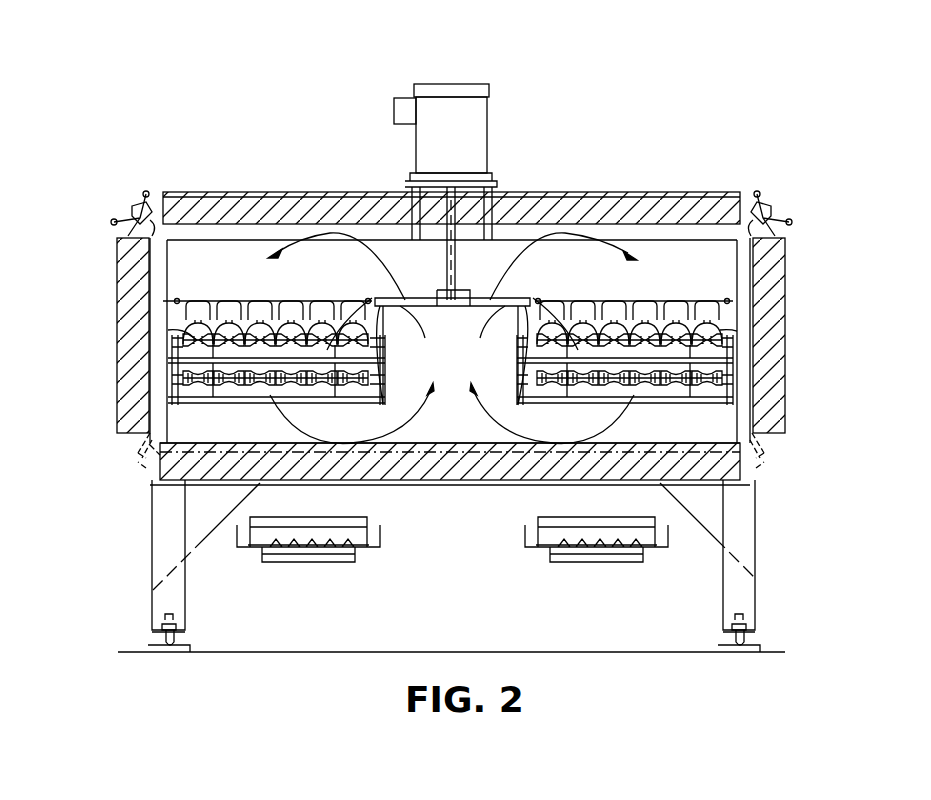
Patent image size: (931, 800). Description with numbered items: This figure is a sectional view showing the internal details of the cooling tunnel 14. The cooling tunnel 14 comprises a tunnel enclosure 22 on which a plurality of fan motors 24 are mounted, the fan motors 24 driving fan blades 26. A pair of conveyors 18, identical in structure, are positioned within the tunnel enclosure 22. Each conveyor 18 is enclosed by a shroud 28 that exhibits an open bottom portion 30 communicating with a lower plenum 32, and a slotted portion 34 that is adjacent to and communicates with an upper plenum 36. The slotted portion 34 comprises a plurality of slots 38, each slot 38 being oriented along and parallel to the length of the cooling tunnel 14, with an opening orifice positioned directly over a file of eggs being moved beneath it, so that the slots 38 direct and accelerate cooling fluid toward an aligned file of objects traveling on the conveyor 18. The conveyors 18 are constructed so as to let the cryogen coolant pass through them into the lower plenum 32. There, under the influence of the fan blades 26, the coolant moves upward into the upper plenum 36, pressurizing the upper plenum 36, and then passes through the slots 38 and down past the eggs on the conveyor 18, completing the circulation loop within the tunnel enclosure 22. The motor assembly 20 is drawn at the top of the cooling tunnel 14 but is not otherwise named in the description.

The cooling tunnel 14 is at (566, 188).
The conveyor 18 is at (185, 333).
The motor assembly 20 is at (448, 78).
The tunnel enclosure 22 is at (700, 205).
The fan motor 24 is at (462, 124).
The fan blade 26 is at (426, 292).
The shroud 28 is at (452, 347).
The open bottom portion 30 is at (285, 400).
The lower plenum 32 is at (466, 433).
The slotted portion 34 is at (335, 296).
The upper plenum 36 is at (210, 276).
The slot 38 is at (320, 298).